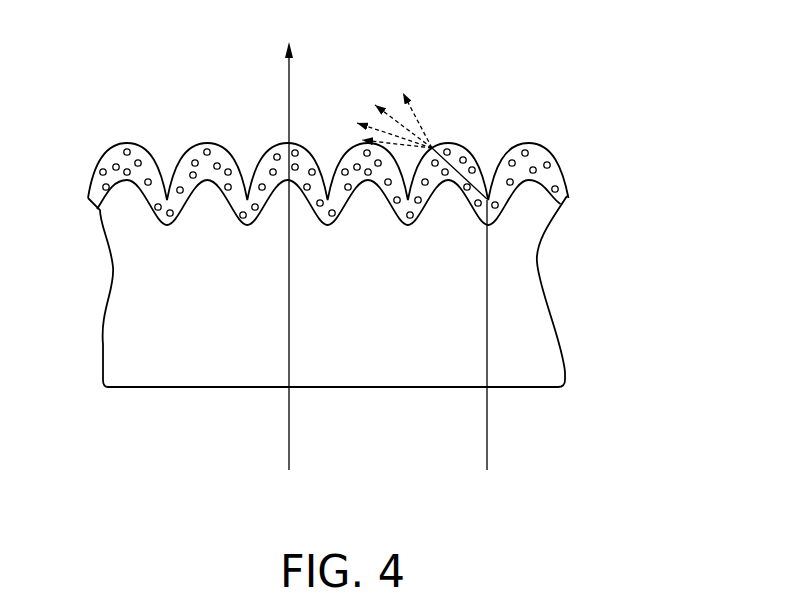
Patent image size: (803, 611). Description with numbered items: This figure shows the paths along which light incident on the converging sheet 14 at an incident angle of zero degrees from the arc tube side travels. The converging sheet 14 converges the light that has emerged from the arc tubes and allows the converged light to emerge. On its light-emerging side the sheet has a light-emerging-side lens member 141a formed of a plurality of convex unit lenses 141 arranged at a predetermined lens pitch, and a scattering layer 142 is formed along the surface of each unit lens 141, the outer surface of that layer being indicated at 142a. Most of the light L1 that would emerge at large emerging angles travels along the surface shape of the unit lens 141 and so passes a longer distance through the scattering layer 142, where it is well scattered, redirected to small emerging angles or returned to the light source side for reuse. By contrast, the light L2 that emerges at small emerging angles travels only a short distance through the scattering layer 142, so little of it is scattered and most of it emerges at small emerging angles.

The converging sheet 14 is at (369, 269).
The unit lens 141 is at (369, 228).
The light-emerging-side lens member 141a is at (503, 147).
The scattering layer 142 is at (350, 145).
The surface of scattering layer 142a is at (133, 147).
The light emerging at large emerging angles L1 is at (388, 130).
The light emerging at small emerging angles L2 is at (289, 92).